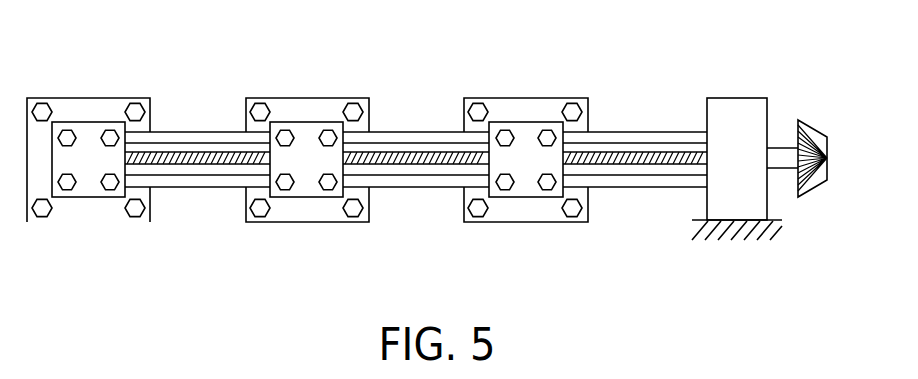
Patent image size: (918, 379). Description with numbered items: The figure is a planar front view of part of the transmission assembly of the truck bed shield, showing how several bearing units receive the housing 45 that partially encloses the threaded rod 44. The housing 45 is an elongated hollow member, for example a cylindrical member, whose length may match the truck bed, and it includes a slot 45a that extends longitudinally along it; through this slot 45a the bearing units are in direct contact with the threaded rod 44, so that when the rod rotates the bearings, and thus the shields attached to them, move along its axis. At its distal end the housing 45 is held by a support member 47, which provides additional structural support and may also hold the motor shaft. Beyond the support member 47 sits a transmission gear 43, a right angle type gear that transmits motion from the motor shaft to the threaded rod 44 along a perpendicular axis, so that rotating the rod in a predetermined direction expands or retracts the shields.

The transmission gear 43 is at (802, 120).
The threaded rod 44 is at (657, 164).
The housing 45 is at (192, 187).
The slot 45a is at (427, 175).
The support member 47 is at (738, 98).